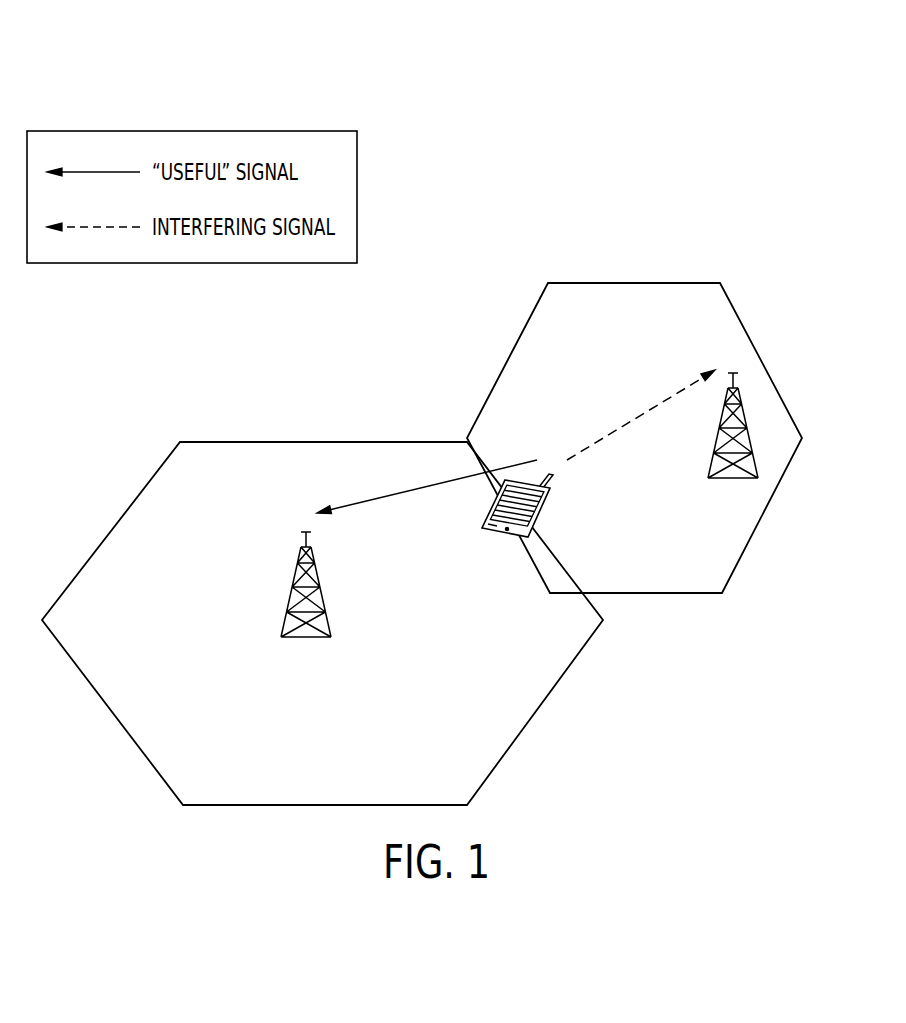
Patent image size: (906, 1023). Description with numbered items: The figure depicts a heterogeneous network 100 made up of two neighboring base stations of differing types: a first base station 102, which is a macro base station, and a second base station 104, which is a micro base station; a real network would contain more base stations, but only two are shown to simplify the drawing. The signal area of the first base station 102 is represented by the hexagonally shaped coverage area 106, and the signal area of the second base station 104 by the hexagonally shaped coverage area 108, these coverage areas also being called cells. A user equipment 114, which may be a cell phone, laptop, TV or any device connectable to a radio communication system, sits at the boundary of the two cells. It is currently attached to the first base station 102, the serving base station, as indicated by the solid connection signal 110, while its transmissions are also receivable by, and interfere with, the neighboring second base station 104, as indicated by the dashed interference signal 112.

The heterogeneous network 100 is at (722, 69).
The eNB1 base station 102 is at (299, 553).
The eNB2 base station 104 is at (727, 400).
The coverage area of eNB1 106 is at (332, 441).
The coverage area of eNB2 108 is at (633, 283).
The connection signal 110 is at (383, 498).
The interference signal 112 is at (627, 423).
The user equipment 114 is at (504, 537).